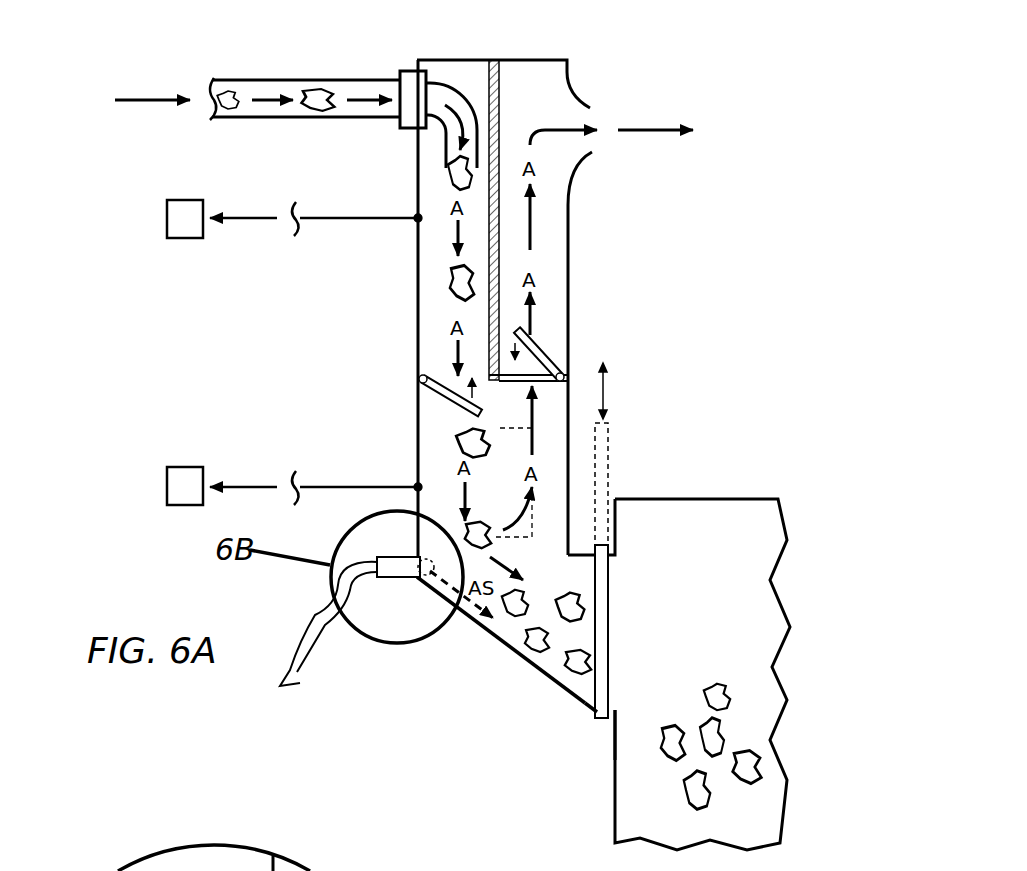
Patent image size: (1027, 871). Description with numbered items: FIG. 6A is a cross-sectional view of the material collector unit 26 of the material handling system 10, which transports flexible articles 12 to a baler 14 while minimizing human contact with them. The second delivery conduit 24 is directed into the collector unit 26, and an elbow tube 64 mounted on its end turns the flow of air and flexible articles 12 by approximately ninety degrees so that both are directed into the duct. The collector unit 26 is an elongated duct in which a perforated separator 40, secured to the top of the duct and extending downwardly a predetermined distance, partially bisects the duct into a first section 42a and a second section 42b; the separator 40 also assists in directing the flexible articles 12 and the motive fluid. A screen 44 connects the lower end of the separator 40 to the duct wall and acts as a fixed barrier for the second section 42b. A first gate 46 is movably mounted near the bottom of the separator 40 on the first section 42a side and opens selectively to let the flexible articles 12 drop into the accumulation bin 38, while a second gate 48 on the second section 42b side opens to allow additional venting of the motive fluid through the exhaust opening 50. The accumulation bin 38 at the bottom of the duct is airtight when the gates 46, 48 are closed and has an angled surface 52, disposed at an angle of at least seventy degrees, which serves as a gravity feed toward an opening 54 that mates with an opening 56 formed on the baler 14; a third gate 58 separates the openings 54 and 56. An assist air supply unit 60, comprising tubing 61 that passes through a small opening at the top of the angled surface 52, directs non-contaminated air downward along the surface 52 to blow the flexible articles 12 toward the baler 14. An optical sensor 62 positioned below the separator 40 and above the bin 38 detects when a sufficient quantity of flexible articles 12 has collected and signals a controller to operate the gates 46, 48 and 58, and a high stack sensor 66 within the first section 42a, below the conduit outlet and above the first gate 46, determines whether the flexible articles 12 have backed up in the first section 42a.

The material handling system 10 is at (770, 108).
The flexible articles 12 is at (450, 185).
The baler 14 is at (750, 478).
The second delivery conduit 24 is at (272, 80).
The material collector unit 26 is at (573, 296).
The accumulation bin 38 is at (522, 668).
The perforated separator 40 is at (500, 104).
The first section 42a is at (433, 246).
The second section 42b is at (553, 258).
The screen 44 is at (543, 378).
The first gate 46 is at (437, 381).
The second gate 48 is at (541, 353).
The exhaust opening 50 is at (592, 152).
The angled surface 52 is at (505, 632).
The opening 54 is at (580, 700).
The opening 56 is at (612, 710).
The third gate 58 is at (602, 593).
The assist air supply unit 60 is at (388, 553).
The tubing 61 is at (322, 650).
The sensor 62 is at (418, 485).
The elbow tube 64 is at (450, 85).
The high stack sensor 66 is at (418, 216).